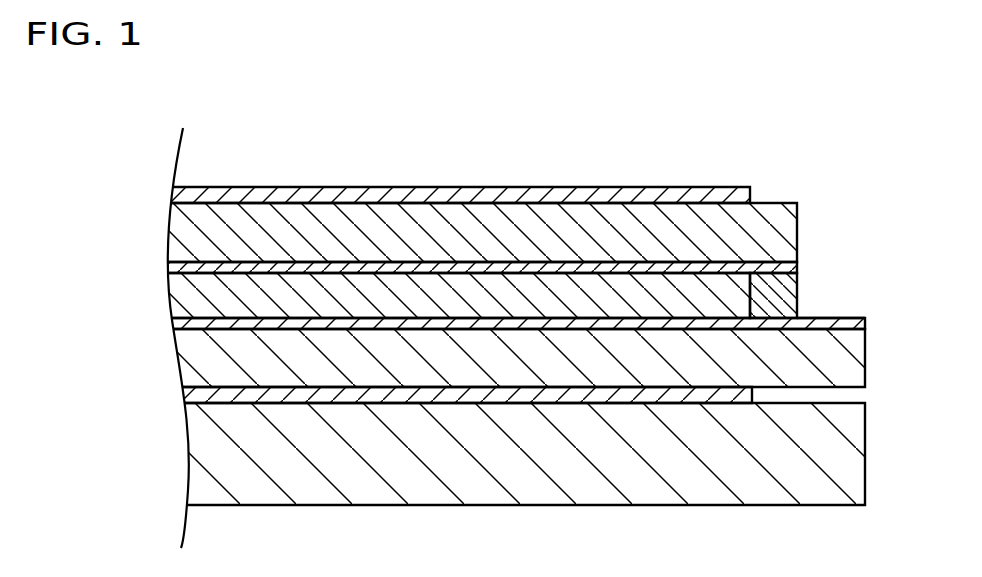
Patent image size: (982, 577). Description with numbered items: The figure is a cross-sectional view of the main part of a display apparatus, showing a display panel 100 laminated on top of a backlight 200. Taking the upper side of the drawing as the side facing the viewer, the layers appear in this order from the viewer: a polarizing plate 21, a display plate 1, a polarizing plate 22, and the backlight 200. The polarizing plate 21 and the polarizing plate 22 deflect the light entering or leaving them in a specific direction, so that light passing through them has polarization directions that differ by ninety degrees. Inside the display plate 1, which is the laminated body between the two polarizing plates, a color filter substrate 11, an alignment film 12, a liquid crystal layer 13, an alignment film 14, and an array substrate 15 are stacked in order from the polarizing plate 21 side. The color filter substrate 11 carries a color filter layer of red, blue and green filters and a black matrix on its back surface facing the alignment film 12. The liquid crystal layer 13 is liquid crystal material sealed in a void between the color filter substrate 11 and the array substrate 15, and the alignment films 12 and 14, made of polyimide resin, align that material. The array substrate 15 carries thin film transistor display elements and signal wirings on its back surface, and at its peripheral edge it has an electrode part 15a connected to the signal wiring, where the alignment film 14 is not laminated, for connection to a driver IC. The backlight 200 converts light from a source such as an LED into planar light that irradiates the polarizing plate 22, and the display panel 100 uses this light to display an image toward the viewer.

The display panel 100 is at (838, 205).
The display plate 1 is at (87, 193).
The color filter substrate 11 is at (186, 231).
The alignment film 12 is at (172, 268).
The liquid crystal layer 13 is at (182, 300).
The alignment film 14 is at (180, 321).
The array substrate 15 is at (190, 372).
The electrode part 15a is at (833, 318).
The polarizing plate 21 is at (181, 196).
The polarizing plate 22 is at (190, 396).
The backlight 200 is at (190, 446).